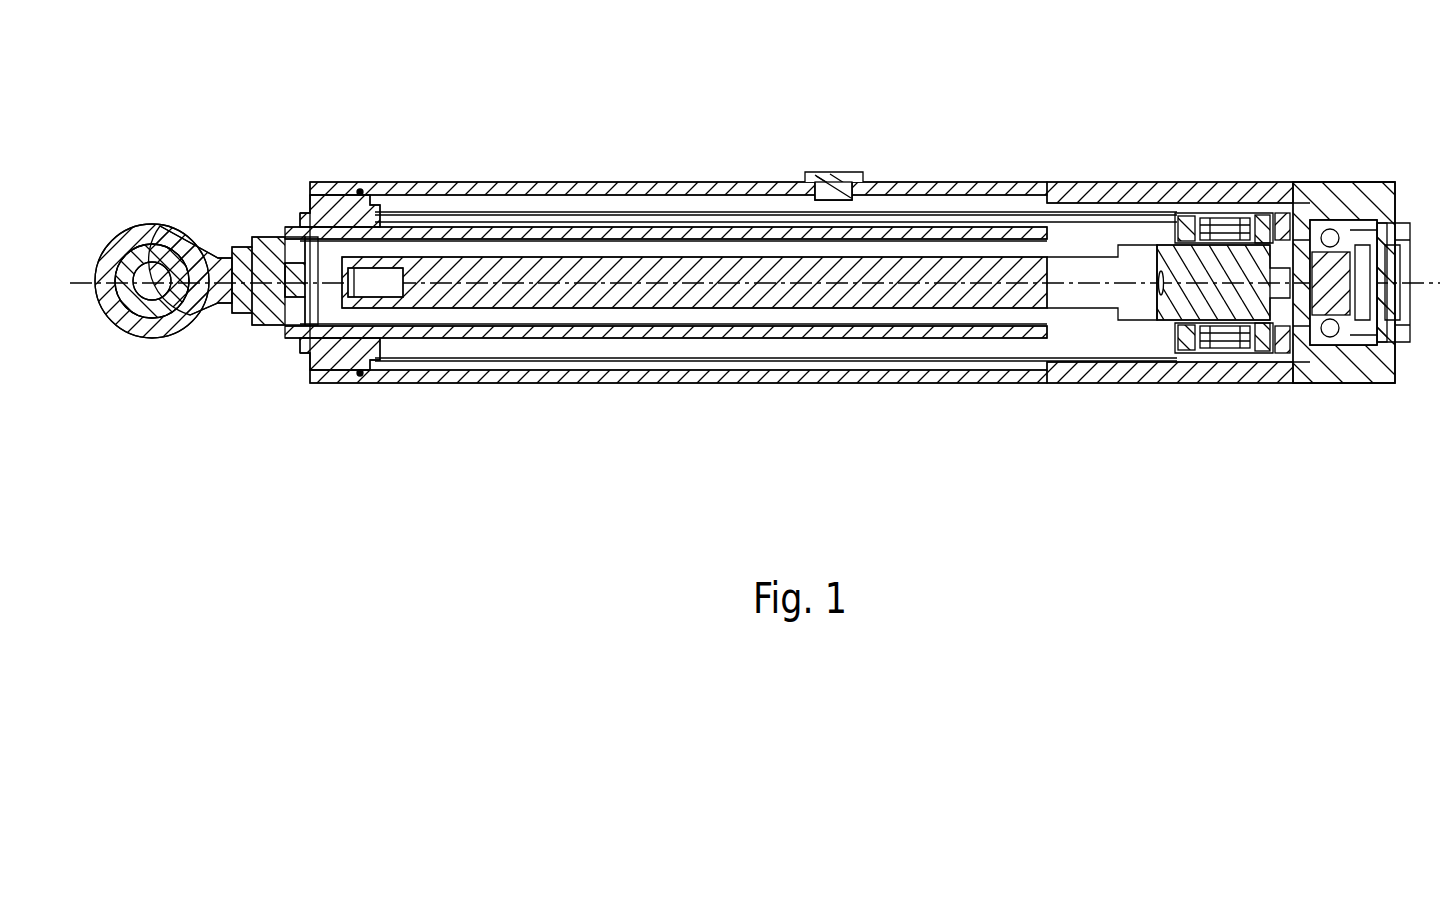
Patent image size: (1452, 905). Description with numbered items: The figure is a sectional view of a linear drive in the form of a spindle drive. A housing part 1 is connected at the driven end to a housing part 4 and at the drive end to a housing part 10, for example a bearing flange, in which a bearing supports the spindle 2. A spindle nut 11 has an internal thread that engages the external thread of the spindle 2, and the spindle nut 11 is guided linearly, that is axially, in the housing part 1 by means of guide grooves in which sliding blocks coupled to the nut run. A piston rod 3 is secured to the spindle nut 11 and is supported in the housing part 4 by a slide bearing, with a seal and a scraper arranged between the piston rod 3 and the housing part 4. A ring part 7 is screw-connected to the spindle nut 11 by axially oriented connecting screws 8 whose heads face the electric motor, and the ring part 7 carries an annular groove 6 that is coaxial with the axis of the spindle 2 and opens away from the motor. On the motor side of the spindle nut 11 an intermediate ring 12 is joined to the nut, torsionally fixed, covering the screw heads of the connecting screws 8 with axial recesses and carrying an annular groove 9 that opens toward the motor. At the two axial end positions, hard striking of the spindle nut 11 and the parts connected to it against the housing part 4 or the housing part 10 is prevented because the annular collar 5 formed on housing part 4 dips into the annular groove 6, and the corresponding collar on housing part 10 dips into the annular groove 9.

The housing part 1 is at (578, 188).
The spindle 2 is at (752, 258).
The piston rod 3 is at (434, 232).
The housing part 4 is at (325, 191).
The annular collar on housing part 4 5 is at (392, 348).
The annular groove on ring part 7 6 is at (1168, 346).
The ring part 7 is at (1192, 348).
The connecting screw 8 is at (1240, 346).
The annular groove on intermediate ring 12 9 is at (1282, 348).
The housing part, e.g., bearing flange 10 is at (1353, 368).
The spindle nut 11 is at (1183, 268).
The intermediate ring 12 is at (1281, 217).